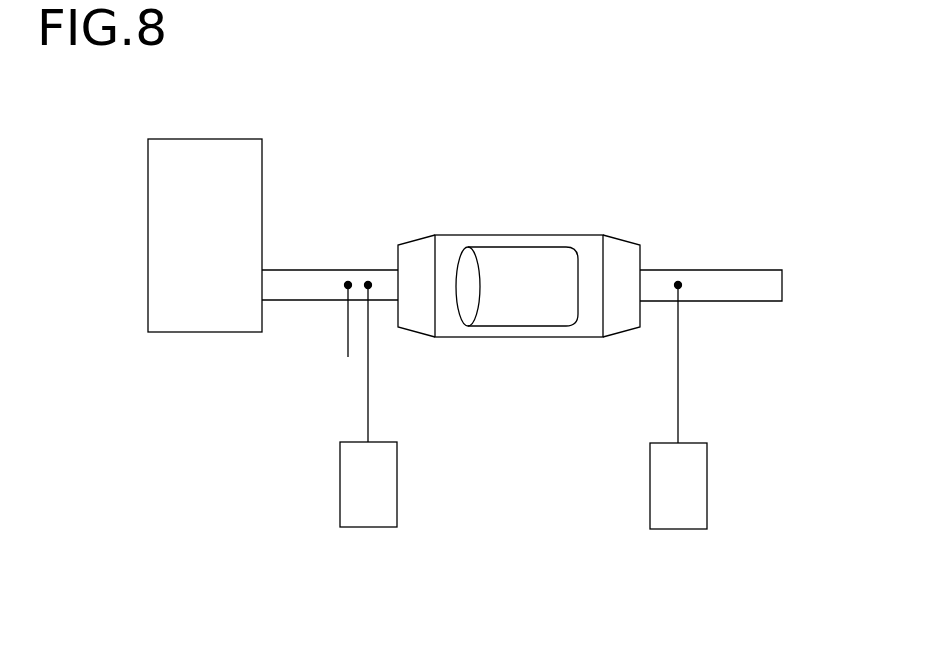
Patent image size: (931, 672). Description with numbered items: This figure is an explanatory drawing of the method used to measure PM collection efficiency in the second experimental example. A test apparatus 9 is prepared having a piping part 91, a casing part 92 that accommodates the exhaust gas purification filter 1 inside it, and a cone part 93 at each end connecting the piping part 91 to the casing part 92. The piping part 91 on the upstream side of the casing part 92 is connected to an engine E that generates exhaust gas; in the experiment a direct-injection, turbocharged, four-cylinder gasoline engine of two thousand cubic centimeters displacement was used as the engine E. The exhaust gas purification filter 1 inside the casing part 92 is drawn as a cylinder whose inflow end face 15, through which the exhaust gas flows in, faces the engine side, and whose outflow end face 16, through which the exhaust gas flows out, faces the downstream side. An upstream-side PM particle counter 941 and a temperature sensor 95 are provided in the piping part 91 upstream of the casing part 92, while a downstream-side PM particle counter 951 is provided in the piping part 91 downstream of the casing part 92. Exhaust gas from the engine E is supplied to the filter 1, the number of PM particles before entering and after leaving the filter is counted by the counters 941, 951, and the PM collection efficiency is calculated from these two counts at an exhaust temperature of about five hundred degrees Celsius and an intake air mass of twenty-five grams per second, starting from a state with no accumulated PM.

The engine E is at (205, 139).
The test apparatus 9 is at (638, 202).
The piping part 91 is at (316, 270).
The casing part 92 is at (525, 235).
The cone part 93 is at (422, 320).
The exhaust gas purification filter 1 is at (553, 313).
The inflow end face 15 is at (472, 283).
The outflow end face 16 is at (585, 285).
The temperature sensor 95 is at (346, 343).
The upstream-side PM particle counter 941 is at (373, 528).
The downstream-side PM particle counter 951 is at (677, 530).